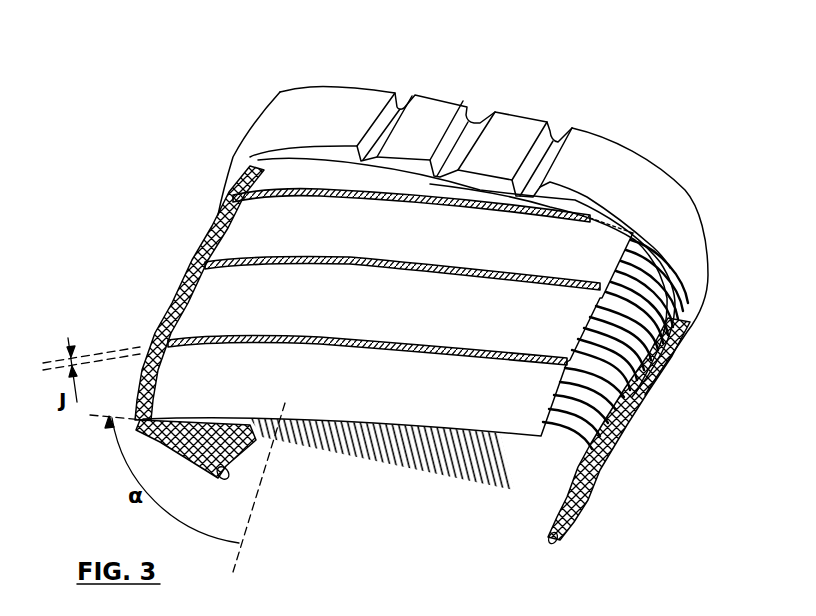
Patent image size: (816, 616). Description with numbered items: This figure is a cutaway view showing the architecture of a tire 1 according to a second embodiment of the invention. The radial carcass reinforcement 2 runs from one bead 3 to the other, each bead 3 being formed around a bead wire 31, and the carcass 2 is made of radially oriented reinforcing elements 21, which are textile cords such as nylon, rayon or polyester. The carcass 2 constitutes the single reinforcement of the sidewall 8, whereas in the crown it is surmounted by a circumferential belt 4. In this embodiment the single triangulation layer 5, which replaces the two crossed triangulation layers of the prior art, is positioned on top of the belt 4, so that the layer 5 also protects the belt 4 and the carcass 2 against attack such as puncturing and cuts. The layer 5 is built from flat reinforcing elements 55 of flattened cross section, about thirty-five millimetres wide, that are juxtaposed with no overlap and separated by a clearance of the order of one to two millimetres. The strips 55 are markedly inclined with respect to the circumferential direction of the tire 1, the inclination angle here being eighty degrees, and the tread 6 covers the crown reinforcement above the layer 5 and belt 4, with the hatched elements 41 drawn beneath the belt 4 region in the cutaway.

The tire 1 is at (699, 100).
The carcass reinforcement 2 is at (67, 255).
The reinforcing elements 21 is at (185, 318).
The bead 3 is at (580, 540).
The bead wire 31 is at (545, 542).
The belt 4 is at (403, 550).
The reinforcing elements 41 is at (385, 467).
The triangulation layer 5 is at (127, 135).
The flat reinforcing elements 55 is at (267, 175).
The tread 6 is at (336, 114).
The sidewall 8 is at (692, 290).